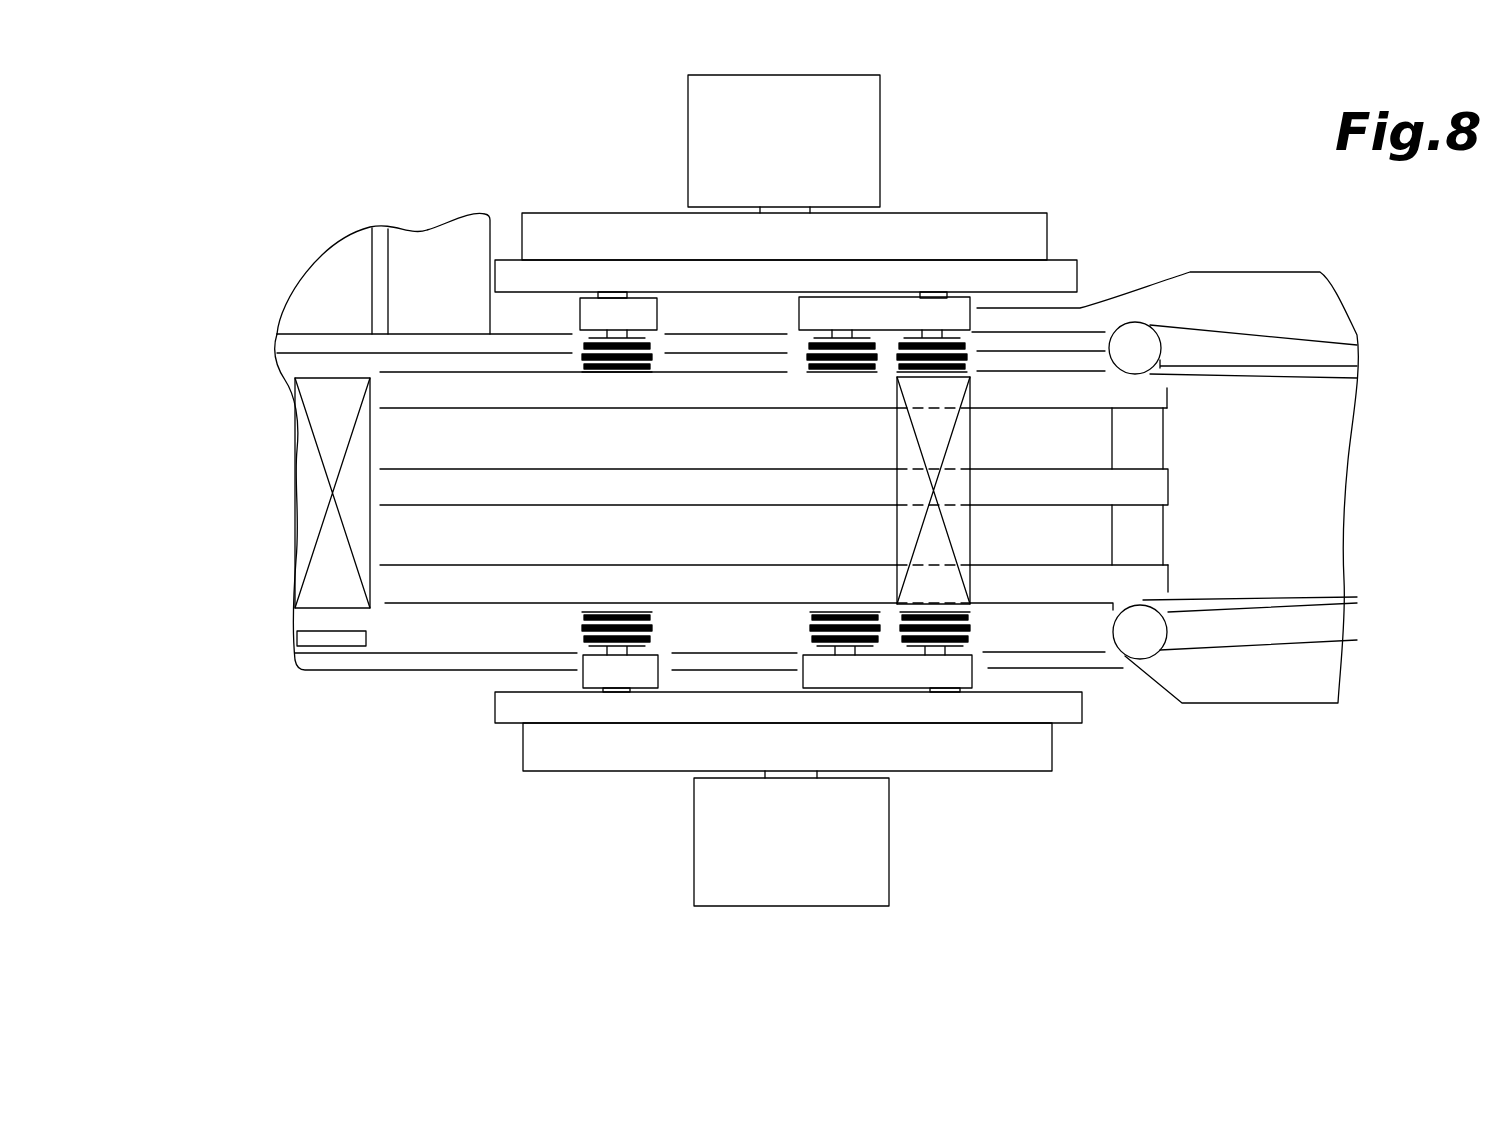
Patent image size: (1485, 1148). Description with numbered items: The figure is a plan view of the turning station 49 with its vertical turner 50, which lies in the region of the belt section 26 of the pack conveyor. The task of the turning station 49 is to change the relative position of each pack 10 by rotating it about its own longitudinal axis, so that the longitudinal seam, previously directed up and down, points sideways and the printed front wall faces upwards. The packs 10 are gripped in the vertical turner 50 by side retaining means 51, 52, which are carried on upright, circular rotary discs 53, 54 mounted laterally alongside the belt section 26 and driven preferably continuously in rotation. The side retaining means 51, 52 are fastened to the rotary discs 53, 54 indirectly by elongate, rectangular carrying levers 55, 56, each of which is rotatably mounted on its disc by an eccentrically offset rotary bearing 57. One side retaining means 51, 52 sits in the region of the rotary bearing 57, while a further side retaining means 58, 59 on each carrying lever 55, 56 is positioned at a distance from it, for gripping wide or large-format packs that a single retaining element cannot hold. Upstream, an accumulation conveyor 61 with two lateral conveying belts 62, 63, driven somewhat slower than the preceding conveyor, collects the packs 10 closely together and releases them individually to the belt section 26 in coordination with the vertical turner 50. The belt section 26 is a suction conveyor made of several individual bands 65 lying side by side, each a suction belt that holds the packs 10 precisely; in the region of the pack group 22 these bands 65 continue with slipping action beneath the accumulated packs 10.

The pack 10 is at (963, 523).
The pack group 22 is at (262, 582).
The belt section 26 is at (422, 729).
The turning station 49 is at (1168, 186).
The vertical turner 50 is at (1024, 190).
The side retaining means 51 is at (967, 335).
The side retaining means 52 is at (957, 643).
The rotary disc 53 is at (547, 278).
The rotary disc 54 is at (517, 703).
The carrying lever 55 is at (602, 310).
The carrying lever 56 is at (627, 670).
The rotary bearing 57 is at (618, 297).
The side retaining means 58 is at (838, 320).
The side retaining means 59 is at (827, 640).
The accumulation conveyor 61 is at (1406, 384).
The conveying belt 62 is at (1335, 319).
The conveying belt 63 is at (1250, 670).
The individual band 65 is at (430, 392).